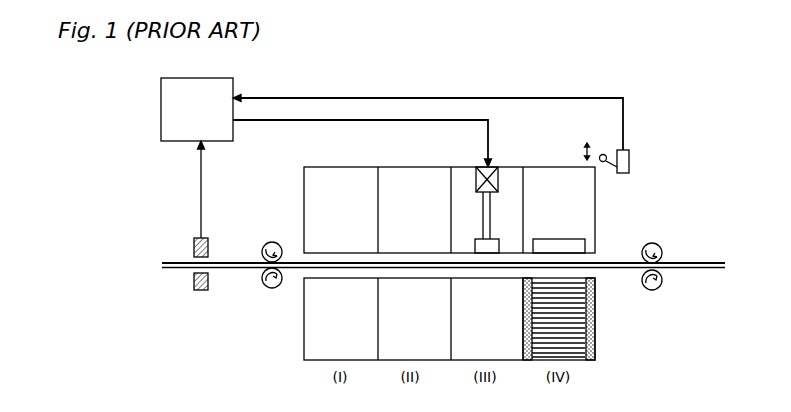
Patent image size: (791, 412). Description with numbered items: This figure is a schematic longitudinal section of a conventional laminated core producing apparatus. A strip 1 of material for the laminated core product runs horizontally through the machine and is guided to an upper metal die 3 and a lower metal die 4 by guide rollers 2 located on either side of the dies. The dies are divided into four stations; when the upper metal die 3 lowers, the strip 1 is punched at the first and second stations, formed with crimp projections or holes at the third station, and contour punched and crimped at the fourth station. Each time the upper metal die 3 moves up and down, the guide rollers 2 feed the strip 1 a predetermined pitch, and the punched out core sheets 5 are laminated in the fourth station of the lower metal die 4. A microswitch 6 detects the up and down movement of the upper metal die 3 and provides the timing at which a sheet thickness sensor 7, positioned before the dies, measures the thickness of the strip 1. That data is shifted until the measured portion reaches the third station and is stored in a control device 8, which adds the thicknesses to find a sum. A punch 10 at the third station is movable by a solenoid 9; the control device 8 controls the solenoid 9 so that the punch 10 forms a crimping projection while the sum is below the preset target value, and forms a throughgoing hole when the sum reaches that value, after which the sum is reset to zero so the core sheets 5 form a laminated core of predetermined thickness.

The strip 1 is at (240, 268).
The guide rollers 2 is at (262, 243).
The upper metal die 3 is at (320, 182).
The lower metal die 4 is at (315, 346).
The punched out core sheets 5 is at (575, 345).
The microswitch 6 is at (625, 163).
The sheet thickness sensor 7 is at (193, 282).
The control device 8 is at (173, 107).
The solenoid 9 is at (489, 172).
The punch 10 is at (495, 243).